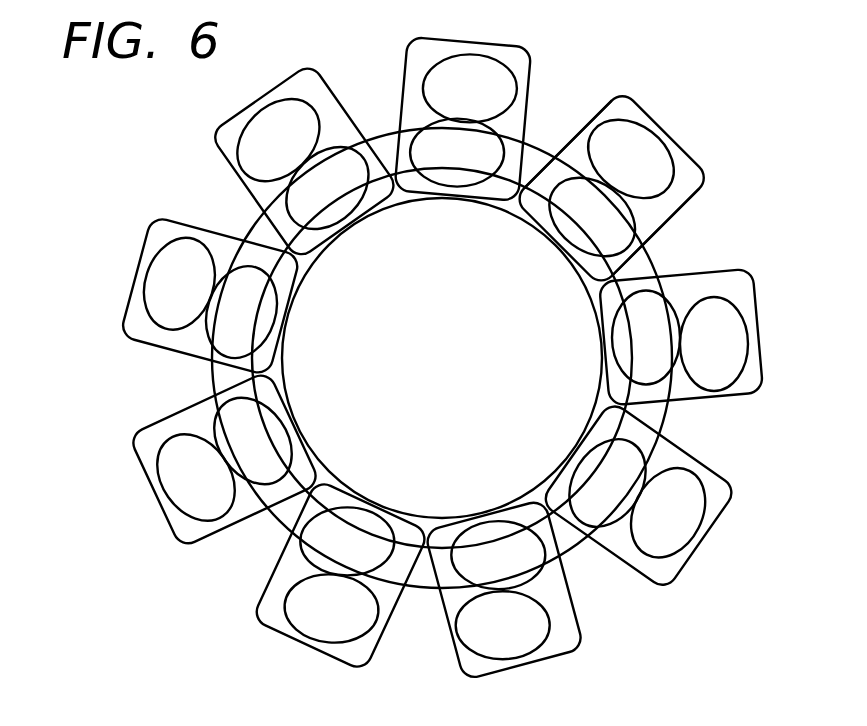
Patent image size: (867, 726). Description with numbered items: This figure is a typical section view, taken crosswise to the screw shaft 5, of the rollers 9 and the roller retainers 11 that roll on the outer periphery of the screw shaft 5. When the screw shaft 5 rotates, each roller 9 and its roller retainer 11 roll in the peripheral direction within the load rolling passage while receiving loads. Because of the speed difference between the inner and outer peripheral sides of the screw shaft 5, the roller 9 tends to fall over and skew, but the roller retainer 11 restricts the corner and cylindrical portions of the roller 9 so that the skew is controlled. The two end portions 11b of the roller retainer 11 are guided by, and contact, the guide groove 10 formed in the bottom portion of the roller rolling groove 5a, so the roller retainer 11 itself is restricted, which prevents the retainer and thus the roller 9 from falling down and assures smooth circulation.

The screw shaft 5 is at (575, 333).
The roller rolling groove 5a is at (522, 212).
The roller 9 is at (670, 165).
The guide groove 10 is at (523, 218).
The roller retainer 11 is at (692, 178).
The end portion of the roller retainer 11b is at (660, 132).